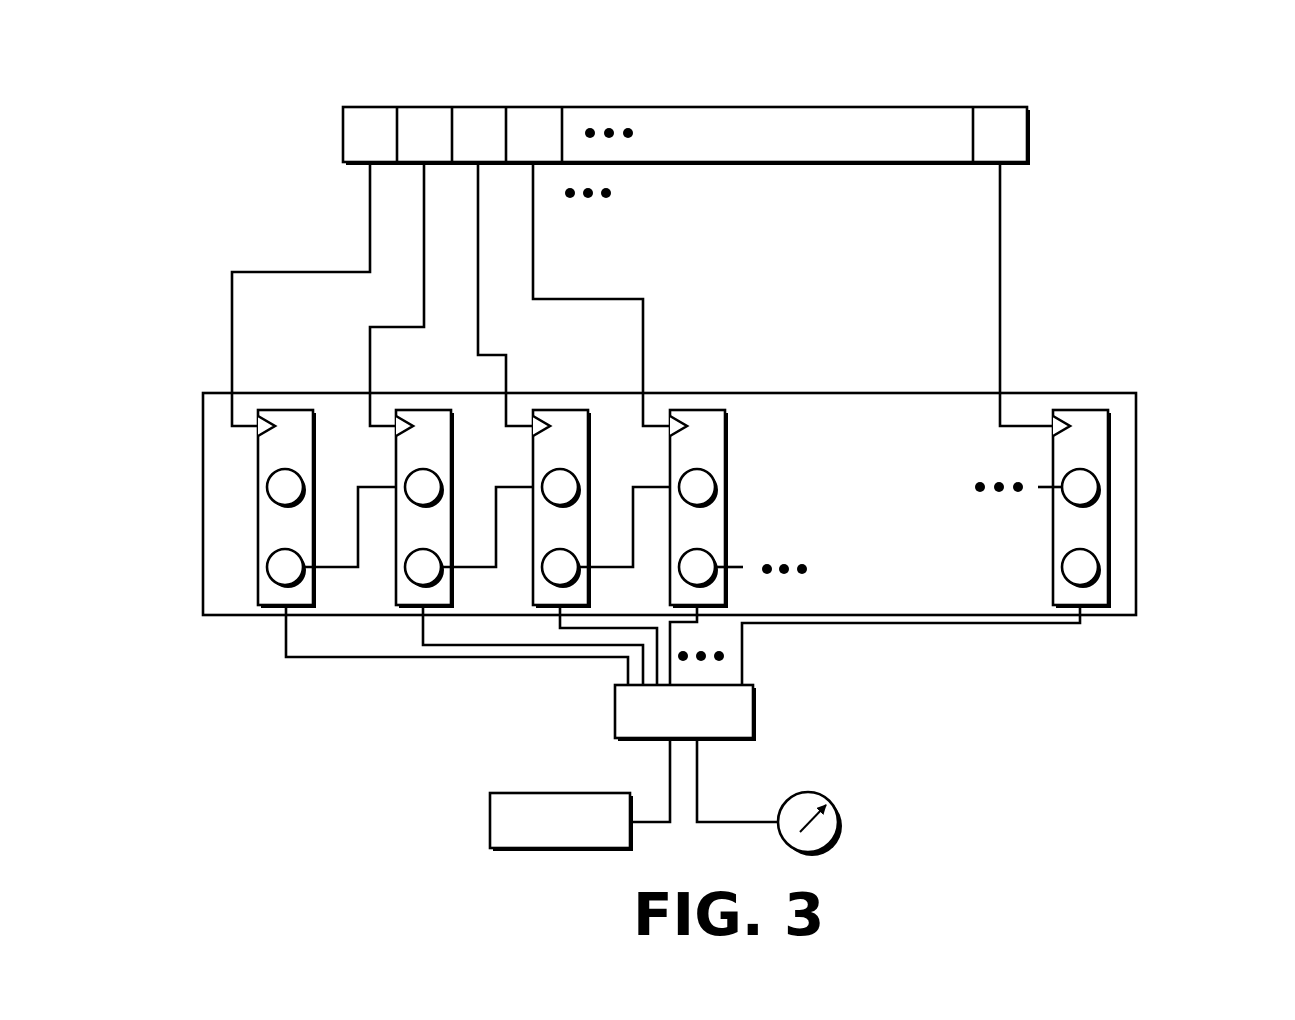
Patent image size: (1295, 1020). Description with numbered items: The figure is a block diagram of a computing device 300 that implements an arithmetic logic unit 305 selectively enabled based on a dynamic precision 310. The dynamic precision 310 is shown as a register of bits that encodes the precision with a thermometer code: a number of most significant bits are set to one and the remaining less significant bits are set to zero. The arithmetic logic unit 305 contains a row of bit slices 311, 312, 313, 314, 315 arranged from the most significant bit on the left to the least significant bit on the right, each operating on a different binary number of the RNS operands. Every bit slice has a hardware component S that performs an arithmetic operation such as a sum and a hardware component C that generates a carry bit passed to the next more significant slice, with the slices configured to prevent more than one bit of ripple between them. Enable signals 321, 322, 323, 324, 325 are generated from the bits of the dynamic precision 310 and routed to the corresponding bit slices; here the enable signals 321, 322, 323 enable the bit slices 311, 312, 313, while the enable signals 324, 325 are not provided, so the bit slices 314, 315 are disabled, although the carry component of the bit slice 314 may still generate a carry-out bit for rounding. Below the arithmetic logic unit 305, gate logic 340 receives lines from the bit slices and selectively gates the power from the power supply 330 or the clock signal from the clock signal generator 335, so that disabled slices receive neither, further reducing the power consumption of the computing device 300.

The computing device 300 is at (1178, 66).
The arithmetic logic unit 305 is at (203, 437).
The dynamic precision 310 is at (343, 133).
The bit slice 311 is at (258, 507).
The bit slice 312 is at (396, 452).
The bit slice 313 is at (533, 452).
The bit slice 314 is at (670, 452).
The bit slice 315 is at (1111, 447).
The enable signal 321 is at (368, 245).
The enable signal 322 is at (423, 245).
The enable signal 323 is at (478, 245).
The enable signal 324 is at (533, 245).
The enable signal 325 is at (1000, 246).
The power supply 330 is at (490, 822).
The clock signal generator 335 is at (840, 822).
The gate logic 340 is at (757, 712).